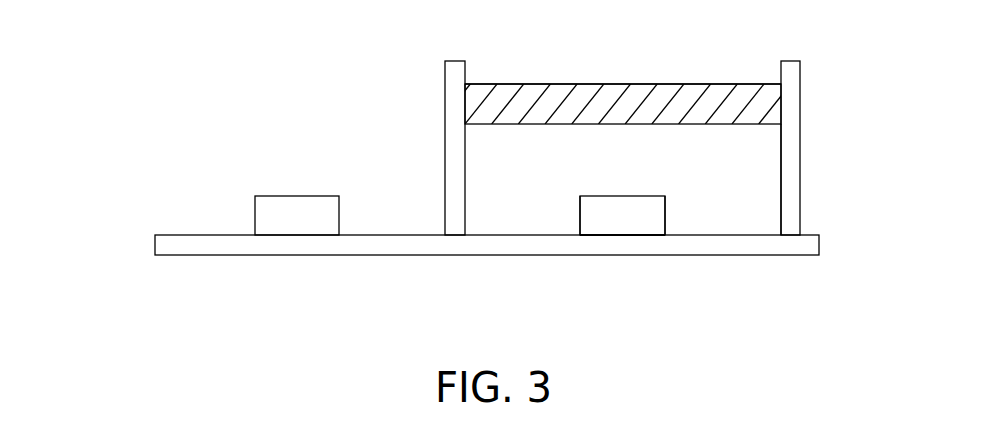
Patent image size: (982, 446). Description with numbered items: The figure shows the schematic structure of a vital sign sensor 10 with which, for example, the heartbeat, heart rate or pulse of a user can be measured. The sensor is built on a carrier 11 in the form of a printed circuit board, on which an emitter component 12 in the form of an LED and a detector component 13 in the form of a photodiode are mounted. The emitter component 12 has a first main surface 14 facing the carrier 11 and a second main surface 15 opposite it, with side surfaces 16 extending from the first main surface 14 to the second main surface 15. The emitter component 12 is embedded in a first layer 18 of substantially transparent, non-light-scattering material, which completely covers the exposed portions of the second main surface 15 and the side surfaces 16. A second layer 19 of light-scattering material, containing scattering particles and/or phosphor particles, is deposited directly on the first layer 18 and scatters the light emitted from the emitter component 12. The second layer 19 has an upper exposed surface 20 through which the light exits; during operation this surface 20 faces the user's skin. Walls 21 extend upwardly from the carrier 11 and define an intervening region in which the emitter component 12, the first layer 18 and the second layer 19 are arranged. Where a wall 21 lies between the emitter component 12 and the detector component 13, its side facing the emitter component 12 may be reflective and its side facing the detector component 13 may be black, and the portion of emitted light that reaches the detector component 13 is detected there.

The vital sign sensor 10 is at (136, 40).
The carrier 11 is at (155, 242).
The emitter component 12 is at (590, 232).
The detector component 13 is at (255, 208).
The first main surface 14 is at (620, 240).
The second main surface 15 is at (610, 194).
The side surfaces 16 is at (577, 218).
The first layer 18 is at (768, 180).
The second layer 19 is at (760, 100).
The upper exposed surface 20 is at (563, 81).
The walls 21 is at (452, 86).